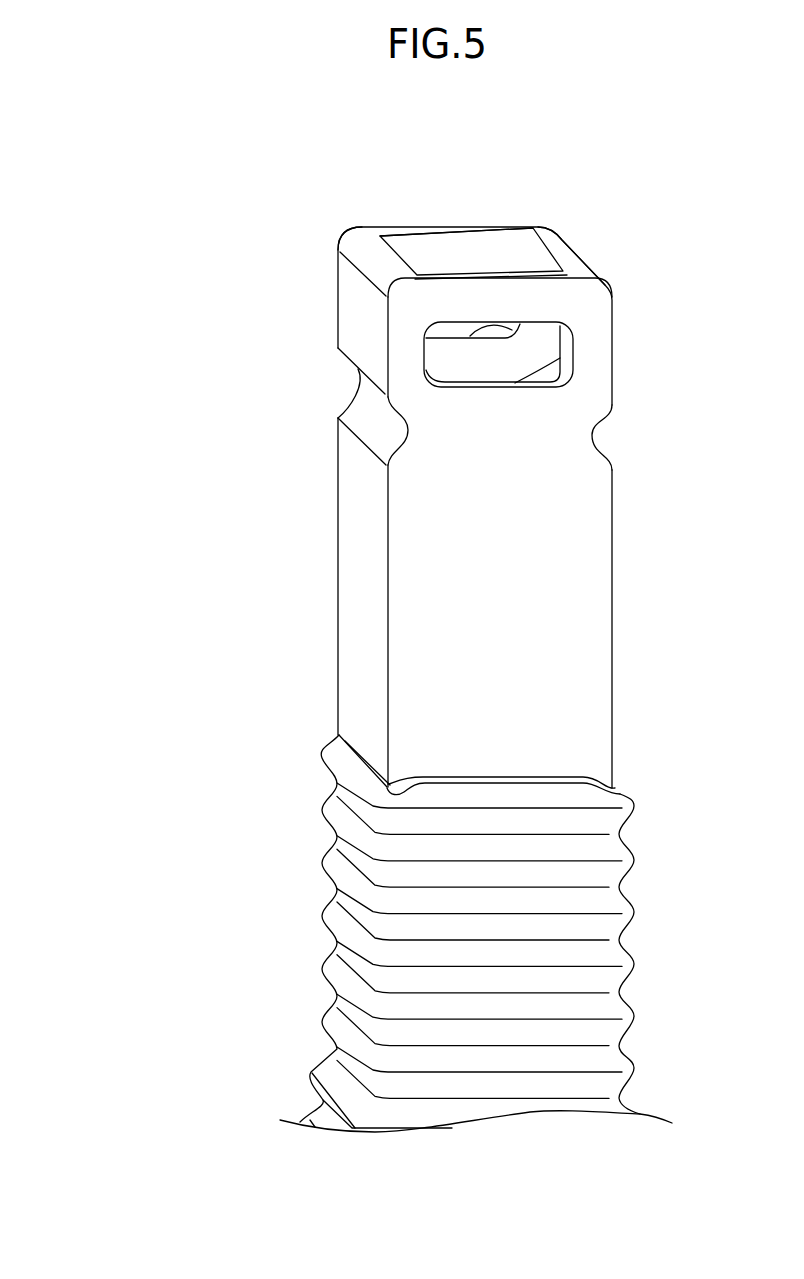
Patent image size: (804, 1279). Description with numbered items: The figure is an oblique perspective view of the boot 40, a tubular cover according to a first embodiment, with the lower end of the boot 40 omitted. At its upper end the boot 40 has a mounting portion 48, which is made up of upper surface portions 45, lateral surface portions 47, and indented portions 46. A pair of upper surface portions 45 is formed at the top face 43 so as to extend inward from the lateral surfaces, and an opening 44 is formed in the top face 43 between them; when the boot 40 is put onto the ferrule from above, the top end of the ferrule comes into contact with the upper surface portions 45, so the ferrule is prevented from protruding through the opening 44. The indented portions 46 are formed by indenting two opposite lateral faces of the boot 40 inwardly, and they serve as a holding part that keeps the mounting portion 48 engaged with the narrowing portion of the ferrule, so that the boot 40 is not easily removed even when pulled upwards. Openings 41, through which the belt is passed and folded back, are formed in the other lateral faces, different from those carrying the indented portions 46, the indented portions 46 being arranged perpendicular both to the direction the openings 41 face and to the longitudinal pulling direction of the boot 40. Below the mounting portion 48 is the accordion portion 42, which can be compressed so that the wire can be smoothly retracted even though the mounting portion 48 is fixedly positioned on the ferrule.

The boot 40 is at (99, 173).
The openings 41 is at (512, 329).
The accordion portion 42 is at (615, 819).
The top face 43 is at (507, 233).
The opening 44 is at (470, 238).
The upper surface portions 45 is at (362, 247).
The indented portions 46 is at (362, 407).
The lateral surface portions 47 is at (347, 295).
The mounting portion 48 is at (260, 145).